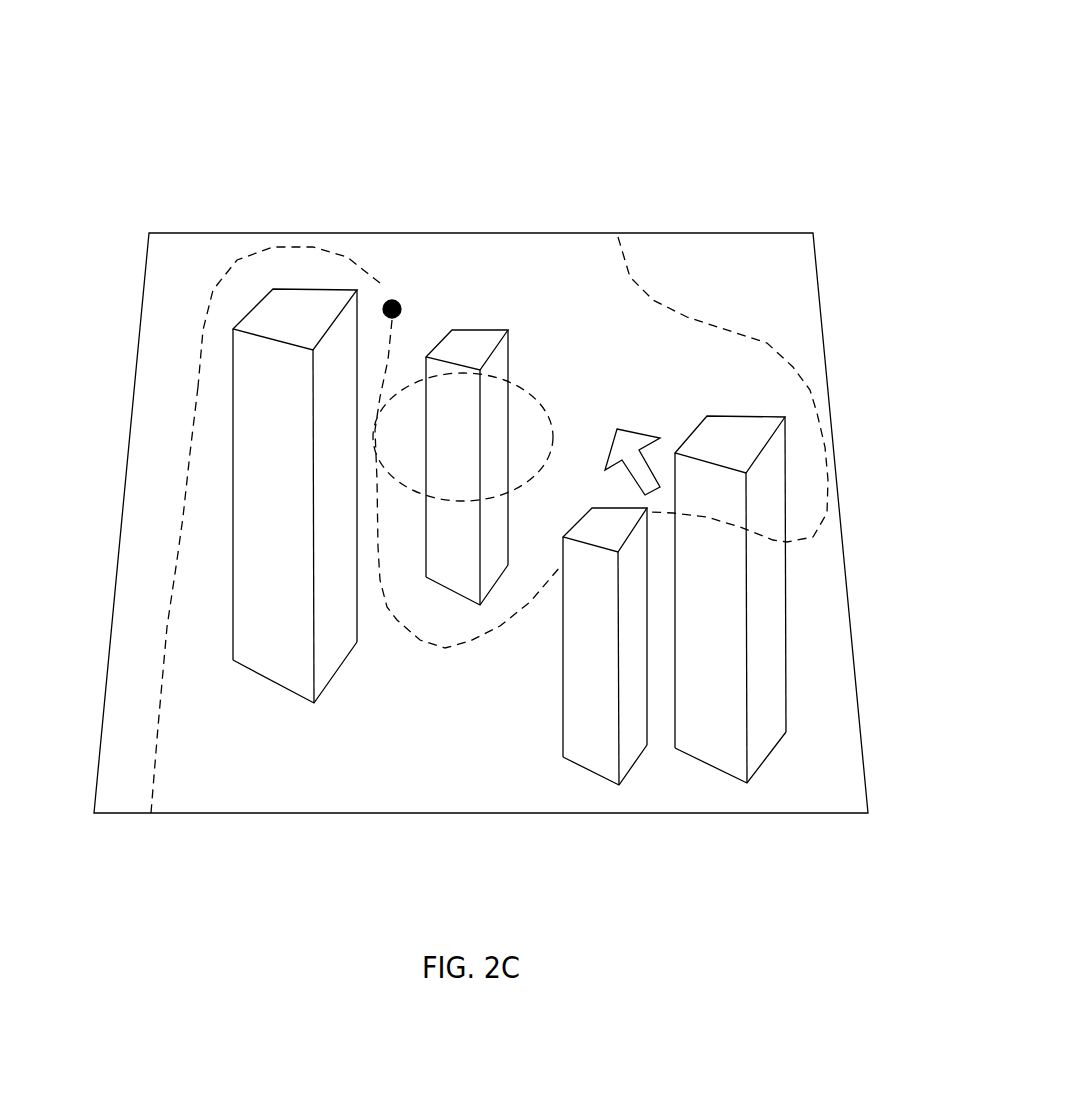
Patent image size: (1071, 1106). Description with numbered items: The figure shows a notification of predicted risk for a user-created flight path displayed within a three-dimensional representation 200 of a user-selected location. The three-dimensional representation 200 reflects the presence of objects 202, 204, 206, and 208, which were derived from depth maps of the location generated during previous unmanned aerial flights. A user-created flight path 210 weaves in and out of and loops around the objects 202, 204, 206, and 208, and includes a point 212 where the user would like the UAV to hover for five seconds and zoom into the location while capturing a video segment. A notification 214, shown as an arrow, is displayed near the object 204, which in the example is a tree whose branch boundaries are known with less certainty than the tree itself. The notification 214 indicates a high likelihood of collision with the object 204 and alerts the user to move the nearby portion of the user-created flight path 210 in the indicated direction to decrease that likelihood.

The three-dimensional representation 200 is at (735, 154).
The object 202 is at (812, 434).
The object 204 is at (649, 792).
The object 206 is at (479, 296).
The object 208 is at (247, 283).
The user-created flight path 210 is at (168, 534).
The point 212 is at (392, 281).
The notification 214 is at (610, 384).